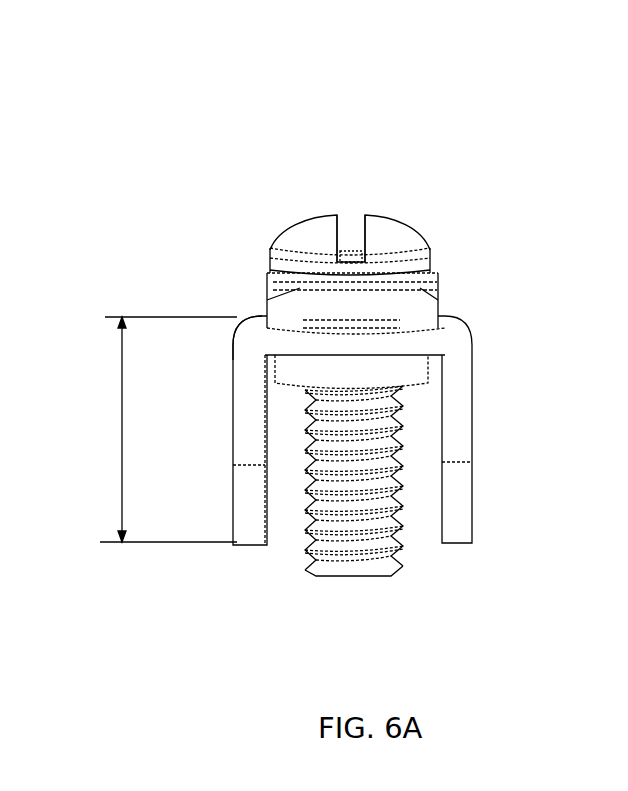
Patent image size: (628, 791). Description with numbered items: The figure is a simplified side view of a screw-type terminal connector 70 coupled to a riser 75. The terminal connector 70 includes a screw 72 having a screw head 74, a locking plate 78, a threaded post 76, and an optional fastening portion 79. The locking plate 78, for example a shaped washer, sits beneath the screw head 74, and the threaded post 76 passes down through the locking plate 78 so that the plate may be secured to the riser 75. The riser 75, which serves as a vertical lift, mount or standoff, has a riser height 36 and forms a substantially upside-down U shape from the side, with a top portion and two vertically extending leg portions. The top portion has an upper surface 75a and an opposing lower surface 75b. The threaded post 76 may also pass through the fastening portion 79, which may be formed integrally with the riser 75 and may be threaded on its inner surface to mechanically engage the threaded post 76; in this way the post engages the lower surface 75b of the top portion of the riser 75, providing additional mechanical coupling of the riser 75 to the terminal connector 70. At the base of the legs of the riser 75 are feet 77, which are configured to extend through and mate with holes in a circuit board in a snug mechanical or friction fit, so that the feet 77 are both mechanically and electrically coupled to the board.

The terminal connector 70 is at (367, 150).
The screw 72 is at (302, 225).
The screw head 74 is at (378, 234).
The locking plate 78 is at (405, 303).
The fastening portion 79 is at (398, 372).
The riser 75 is at (450, 427).
The upper surface 75a is at (243, 313).
The lower surface 75b is at (268, 357).
The threaded post 76 is at (375, 538).
The feet 77 is at (460, 543).
The riser height 36 is at (122, 441).